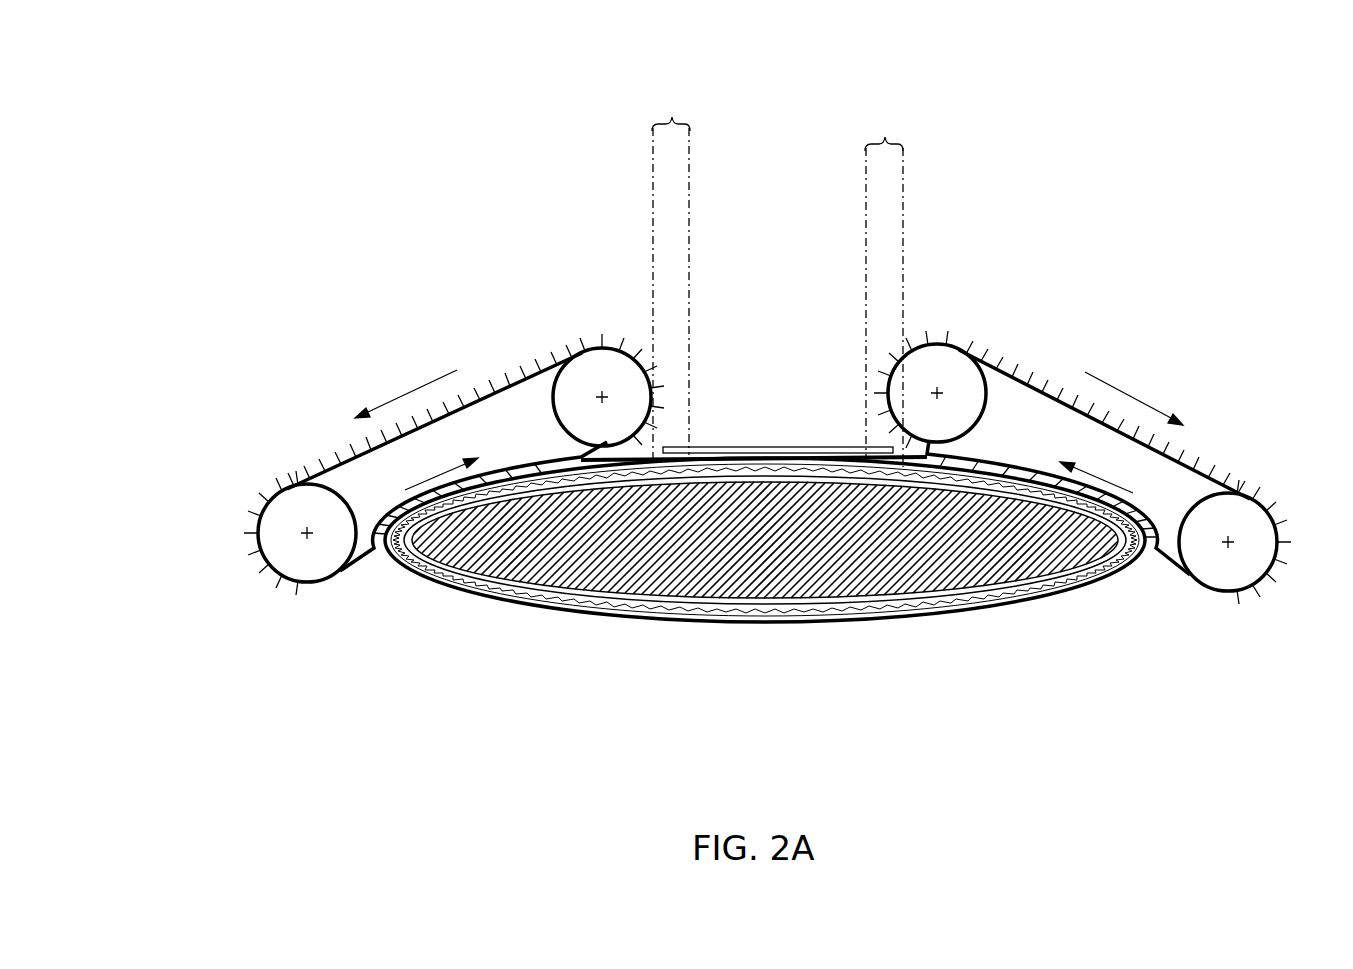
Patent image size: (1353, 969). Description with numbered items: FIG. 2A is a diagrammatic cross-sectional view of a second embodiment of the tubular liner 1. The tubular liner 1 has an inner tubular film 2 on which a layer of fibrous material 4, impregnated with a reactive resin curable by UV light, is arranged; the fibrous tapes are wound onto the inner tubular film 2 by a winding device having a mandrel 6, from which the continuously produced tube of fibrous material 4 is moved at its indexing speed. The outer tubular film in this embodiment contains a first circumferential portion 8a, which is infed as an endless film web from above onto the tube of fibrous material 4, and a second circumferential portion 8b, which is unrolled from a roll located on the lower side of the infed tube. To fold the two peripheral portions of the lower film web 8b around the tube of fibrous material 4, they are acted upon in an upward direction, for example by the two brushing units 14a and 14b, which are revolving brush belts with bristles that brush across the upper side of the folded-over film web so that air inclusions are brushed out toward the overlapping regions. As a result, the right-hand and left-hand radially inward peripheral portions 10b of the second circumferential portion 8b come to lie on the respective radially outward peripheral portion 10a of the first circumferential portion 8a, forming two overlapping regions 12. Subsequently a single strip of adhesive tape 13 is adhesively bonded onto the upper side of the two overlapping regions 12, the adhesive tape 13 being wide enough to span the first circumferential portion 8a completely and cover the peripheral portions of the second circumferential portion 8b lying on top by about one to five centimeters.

The tubular liner 1 is at (415, 675).
The inner tubular film 2 is at (1140, 560).
The layer of fibrous material 4 is at (920, 617).
The mandrel 6 is at (680, 588).
The first circumferential portion 8a is at (763, 463).
The second circumferential portion 8b is at (618, 620).
The radially outward peripheral portion 10a is at (870, 450).
The radially inward peripheral portion 10b is at (670, 463).
The overlapping region 12 is at (663, 112).
The adhesive tape 13 is at (805, 437).
The brushing unit 14a is at (293, 444).
The brushing unit 14b is at (1215, 410).